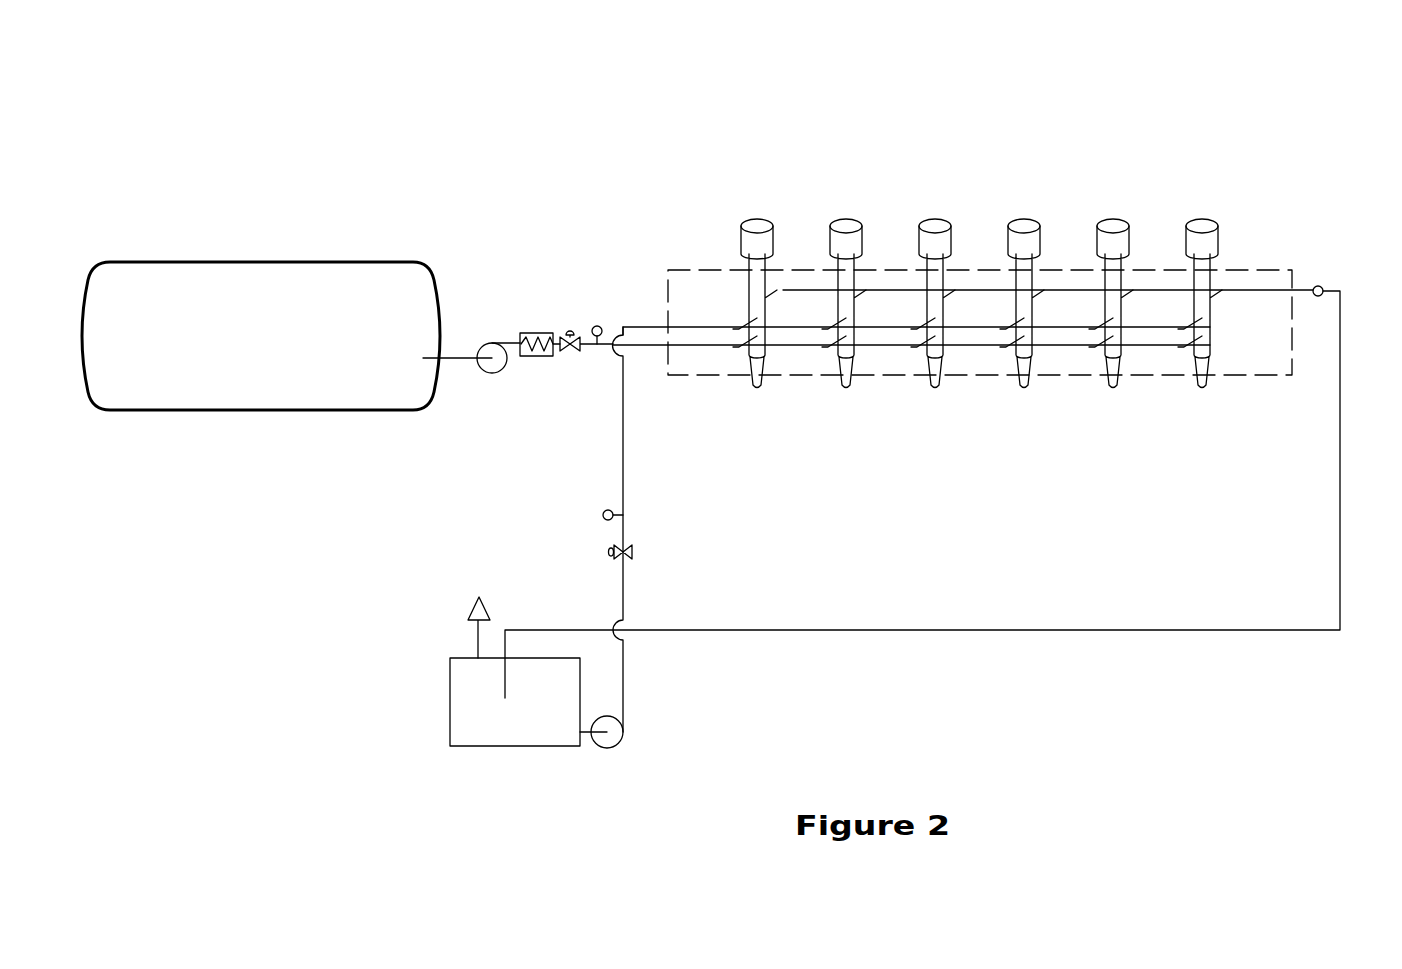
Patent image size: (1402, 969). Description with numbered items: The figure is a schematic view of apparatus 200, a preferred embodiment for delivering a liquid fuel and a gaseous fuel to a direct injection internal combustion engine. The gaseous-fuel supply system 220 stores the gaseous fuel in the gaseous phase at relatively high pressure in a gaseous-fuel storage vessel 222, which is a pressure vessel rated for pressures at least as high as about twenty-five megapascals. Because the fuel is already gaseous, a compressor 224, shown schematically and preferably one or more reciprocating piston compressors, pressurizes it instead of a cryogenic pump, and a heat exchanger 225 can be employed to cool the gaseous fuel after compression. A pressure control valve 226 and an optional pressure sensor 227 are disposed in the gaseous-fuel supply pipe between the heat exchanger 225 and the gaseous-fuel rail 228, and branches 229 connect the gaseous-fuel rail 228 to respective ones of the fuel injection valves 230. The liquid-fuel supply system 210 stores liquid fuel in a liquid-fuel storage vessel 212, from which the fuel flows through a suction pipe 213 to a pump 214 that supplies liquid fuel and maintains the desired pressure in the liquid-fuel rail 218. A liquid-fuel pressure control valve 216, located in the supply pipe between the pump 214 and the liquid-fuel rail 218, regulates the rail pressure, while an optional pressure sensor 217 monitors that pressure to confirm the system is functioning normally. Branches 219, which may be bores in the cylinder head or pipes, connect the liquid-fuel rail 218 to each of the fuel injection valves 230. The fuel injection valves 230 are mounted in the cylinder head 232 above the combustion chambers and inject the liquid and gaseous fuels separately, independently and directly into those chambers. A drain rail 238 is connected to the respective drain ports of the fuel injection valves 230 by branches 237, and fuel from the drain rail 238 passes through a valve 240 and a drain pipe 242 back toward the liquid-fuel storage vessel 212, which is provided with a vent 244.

The apparatus 200 is at (356, 121).
The gaseous-fuel supply system 220 is at (493, 214).
The liquid-fuel supply system 210 is at (686, 557).
The gaseous-fuel storage vessel 222 is at (257, 305).
The compressor 224 is at (492, 373).
The heat exchanger 225 is at (527, 360).
The pressure control valve 226 is at (572, 356).
The pressure sensor 227 is at (597, 325).
The branches 219 is at (716, 322).
The liquid-fuel rail 218 is at (744, 335).
The branches 237 is at (1232, 252).
The cylinder head 232 is at (1240, 282).
The valve 240 is at (1316, 286).
The drain pipe 242 is at (1338, 530).
The gaseous-fuel rail 228 is at (885, 355).
The branches 229 is at (1097, 352).
The drain rail 238 is at (1222, 352).
The fuel injection valves 230 is at (757, 228).
The pressure sensor 217 is at (603, 520).
The liquid-fuel pressure control valve 216 is at (612, 556).
The vent 244 is at (478, 640).
The liquid-fuel storage vessel 212 is at (470, 710).
The pump 214 is at (612, 728).
The suction pipe 213 is at (583, 738).